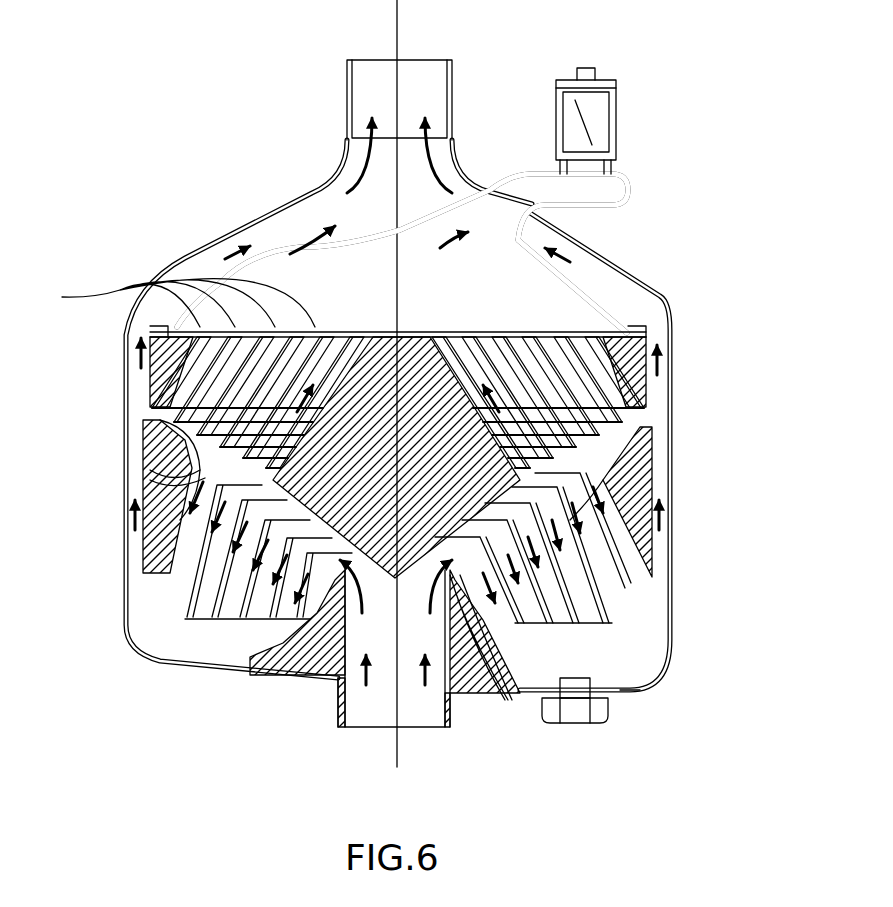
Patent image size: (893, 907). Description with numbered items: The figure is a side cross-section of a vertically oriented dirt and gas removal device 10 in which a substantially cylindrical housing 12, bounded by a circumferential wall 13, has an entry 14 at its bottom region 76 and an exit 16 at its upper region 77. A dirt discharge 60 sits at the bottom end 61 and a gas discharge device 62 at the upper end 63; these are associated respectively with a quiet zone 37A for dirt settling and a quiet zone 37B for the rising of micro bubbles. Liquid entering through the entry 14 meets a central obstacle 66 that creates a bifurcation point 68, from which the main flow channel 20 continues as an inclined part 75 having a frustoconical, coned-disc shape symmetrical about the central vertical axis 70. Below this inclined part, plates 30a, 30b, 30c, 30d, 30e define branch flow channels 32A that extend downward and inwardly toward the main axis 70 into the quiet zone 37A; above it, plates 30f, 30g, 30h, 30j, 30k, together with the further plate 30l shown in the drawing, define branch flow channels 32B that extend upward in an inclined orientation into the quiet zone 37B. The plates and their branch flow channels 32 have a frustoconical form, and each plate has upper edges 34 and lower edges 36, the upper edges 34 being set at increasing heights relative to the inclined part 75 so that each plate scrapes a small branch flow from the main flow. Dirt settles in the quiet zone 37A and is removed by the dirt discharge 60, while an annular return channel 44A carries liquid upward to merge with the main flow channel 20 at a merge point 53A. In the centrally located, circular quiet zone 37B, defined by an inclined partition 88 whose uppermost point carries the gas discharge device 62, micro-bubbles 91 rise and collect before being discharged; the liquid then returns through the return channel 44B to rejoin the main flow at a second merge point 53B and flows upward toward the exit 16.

The dirt and gas removal device 10 is at (686, 332).
The housing 12 is at (225, 233).
The wall 13 is at (259, 232).
The entry 14 is at (360, 722).
The exit 16 is at (347, 68).
The main flow channel 20 is at (436, 652).
The plate 30a is at (294, 620).
The plate 30b is at (264, 620).
The plate 30c is at (234, 620).
The plate 30d is at (201, 620).
The plate 30e is at (180, 540).
The plate 30f is at (608, 518).
The plate 30g is at (598, 482).
The plate 30h is at (590, 470).
The plate 30j is at (615, 405).
The plate 30k is at (640, 373).
The blade 30l is at (605, 421).
The branch flow channels 32 is at (474, 369).
The branch flow channels 32A is at (187, 585).
The branch flow channels 32B is at (268, 405).
The upper edges 34 is at (506, 756).
The lower edges 36 is at (185, 492).
The quiet zone 37A is at (142, 603).
The quiet zone 37B is at (498, 301).
The return channel 44A is at (140, 528).
The return channel 44B is at (148, 332).
The merge point 53A is at (138, 412).
The second merge point 53B is at (210, 258).
The dirt discharge 60 is at (579, 725).
The bottom end 61 is at (622, 700).
The gas discharge device 62 is at (620, 120).
The upper end 63 is at (499, 99).
The central obstacle 66 is at (353, 456).
The bifurcation point 68 is at (358, 622).
The central vertical axis 70 is at (397, 298).
The inclined part 75 is at (165, 452).
The bottom region 76 is at (670, 730).
The upper region 77 is at (278, 100).
The partition 88 is at (315, 238).
The micro-bubbles 91 is at (274, 283).